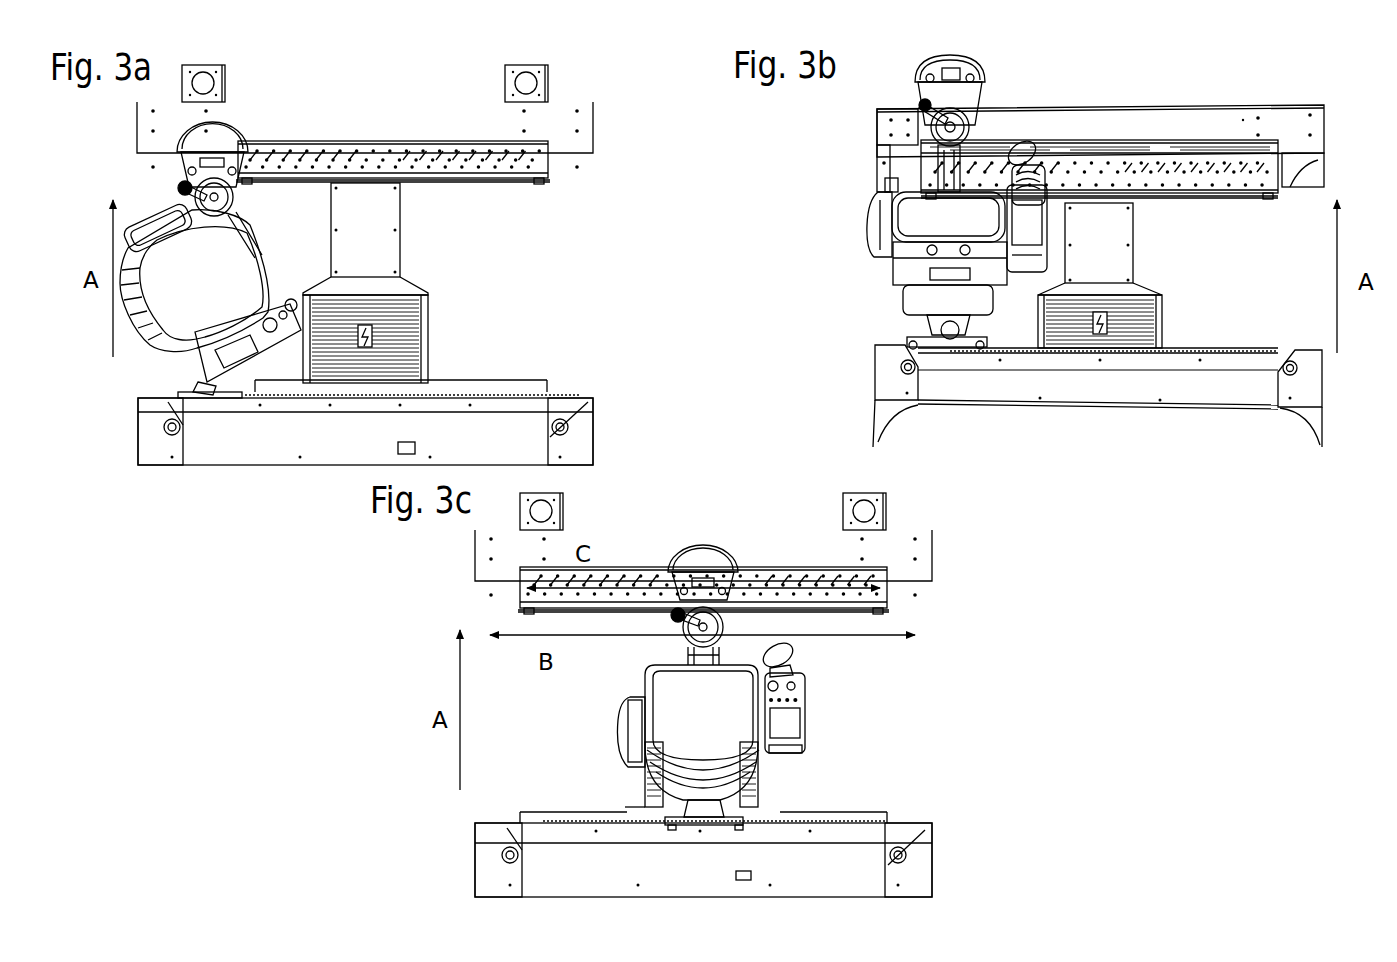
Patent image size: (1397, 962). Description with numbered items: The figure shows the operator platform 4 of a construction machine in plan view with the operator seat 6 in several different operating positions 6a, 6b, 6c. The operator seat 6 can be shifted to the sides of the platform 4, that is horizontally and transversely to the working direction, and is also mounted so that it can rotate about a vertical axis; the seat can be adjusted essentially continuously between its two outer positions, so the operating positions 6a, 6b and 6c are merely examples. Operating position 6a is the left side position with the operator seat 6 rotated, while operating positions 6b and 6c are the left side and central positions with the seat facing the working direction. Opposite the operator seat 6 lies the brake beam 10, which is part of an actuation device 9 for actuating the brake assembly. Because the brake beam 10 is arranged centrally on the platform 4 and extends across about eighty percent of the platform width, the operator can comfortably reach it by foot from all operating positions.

In FIG. 3A, the operator platform 4 is at (365, 92).
In FIG. 3B, the operator platform 4 is at (1112, 97).
In FIG. 3C, the operator platform 4 is at (705, 517).
In FIG. 3A, the operator seat 6 is at (210, 337).
In FIG. 3B, the operator seat 6 is at (851, 202).
In FIG. 3C, the operator seat 6 is at (828, 687).
In FIG. 3A, the operating position 6a is at (202, 287).
In FIG. 3B, the operating position 6b is at (917, 223).
In FIG. 3C, the operating position 6c is at (722, 728).
In FIG. 3A, the actuation device 9 is at (477, 152).
In FIG. 3B, the actuation device 9 is at (975, 180).
In FIG. 3C, the actuation device 9 is at (852, 582).
In FIG. 3A, the brake beam 10 is at (425, 155).
In FIG. 3B, the brake beam 10 is at (1207, 177).
In FIG. 3C, the brake beam 10 is at (770, 590).